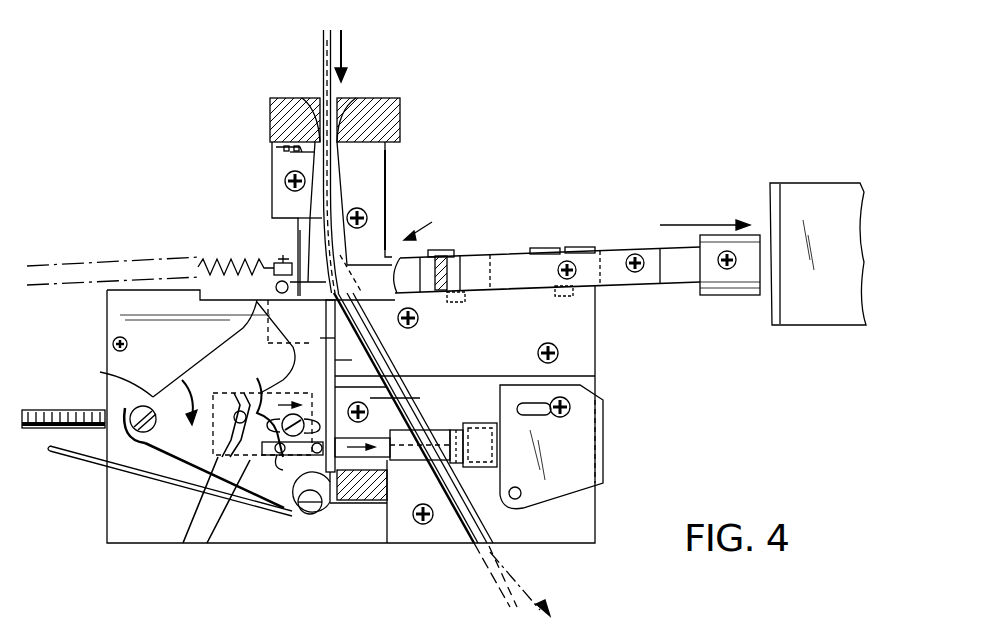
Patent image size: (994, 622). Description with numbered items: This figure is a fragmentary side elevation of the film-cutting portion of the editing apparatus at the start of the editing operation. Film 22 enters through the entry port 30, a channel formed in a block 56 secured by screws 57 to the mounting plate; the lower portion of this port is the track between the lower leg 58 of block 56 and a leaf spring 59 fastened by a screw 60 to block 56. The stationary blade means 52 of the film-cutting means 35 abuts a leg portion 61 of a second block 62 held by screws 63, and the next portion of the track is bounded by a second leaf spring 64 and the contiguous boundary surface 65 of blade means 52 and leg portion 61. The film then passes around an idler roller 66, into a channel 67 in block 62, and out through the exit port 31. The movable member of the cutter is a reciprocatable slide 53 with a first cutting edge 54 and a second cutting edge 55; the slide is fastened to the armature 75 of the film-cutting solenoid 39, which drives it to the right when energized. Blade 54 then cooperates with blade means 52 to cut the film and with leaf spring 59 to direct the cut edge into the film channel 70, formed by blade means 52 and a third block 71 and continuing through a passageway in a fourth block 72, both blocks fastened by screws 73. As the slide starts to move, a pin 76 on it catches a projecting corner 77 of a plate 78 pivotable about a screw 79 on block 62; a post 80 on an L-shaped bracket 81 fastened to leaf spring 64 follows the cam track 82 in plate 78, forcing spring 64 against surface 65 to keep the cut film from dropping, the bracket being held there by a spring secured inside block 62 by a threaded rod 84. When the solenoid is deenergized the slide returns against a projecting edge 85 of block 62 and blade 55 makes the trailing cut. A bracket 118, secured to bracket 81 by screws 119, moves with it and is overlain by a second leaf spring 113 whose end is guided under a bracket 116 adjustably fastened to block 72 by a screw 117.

The film 22 is at (322, 80).
The entry port 30 is at (340, 100).
The exit port 31 is at (107, 477).
The film-cutting means 35 is at (428, 222).
The film-cutting solenoid 39 is at (868, 186).
The stationary blade means 52 is at (368, 360).
The reciprocatable slide 53 is at (626, 288).
The first cutting edge 54 is at (312, 270).
The second cutting edge 55 is at (398, 268).
The block 56 is at (374, 163).
The screws 57 is at (284, 184).
The lower leg 58 is at (386, 178).
The leaf spring 59 is at (312, 158).
The screw 60 is at (285, 150).
The leg portion 61 is at (378, 421).
The second block 62 is at (120, 303).
The screws 63 is at (113, 344).
The second leaf spring 64 is at (326, 320).
The boundary surface 65 is at (353, 359).
The idler roller 66 is at (310, 514).
The channel 67 is at (195, 497).
The film channel 70 is at (487, 531).
The third block 71 is at (649, 339).
The fourth block 72 is at (590, 500).
The screws 73 is at (414, 311).
The armature 75 is at (742, 237).
The pin 76 is at (272, 265).
The projecting corner 77 is at (258, 312).
The plate 78 is at (140, 394).
The screw 79 is at (132, 412).
The post 80 is at (247, 453).
The L-shaped bracket 81 is at (247, 463).
The cam track 82 is at (172, 476).
The threaded rod 84 is at (44, 430).
The projecting edge 85 is at (198, 268).
The second leaf spring 113 is at (466, 470).
The bracket 116 is at (596, 440).
The screw 117 is at (568, 404).
The bracket 118 is at (385, 452).
The screws 119 is at (298, 456).